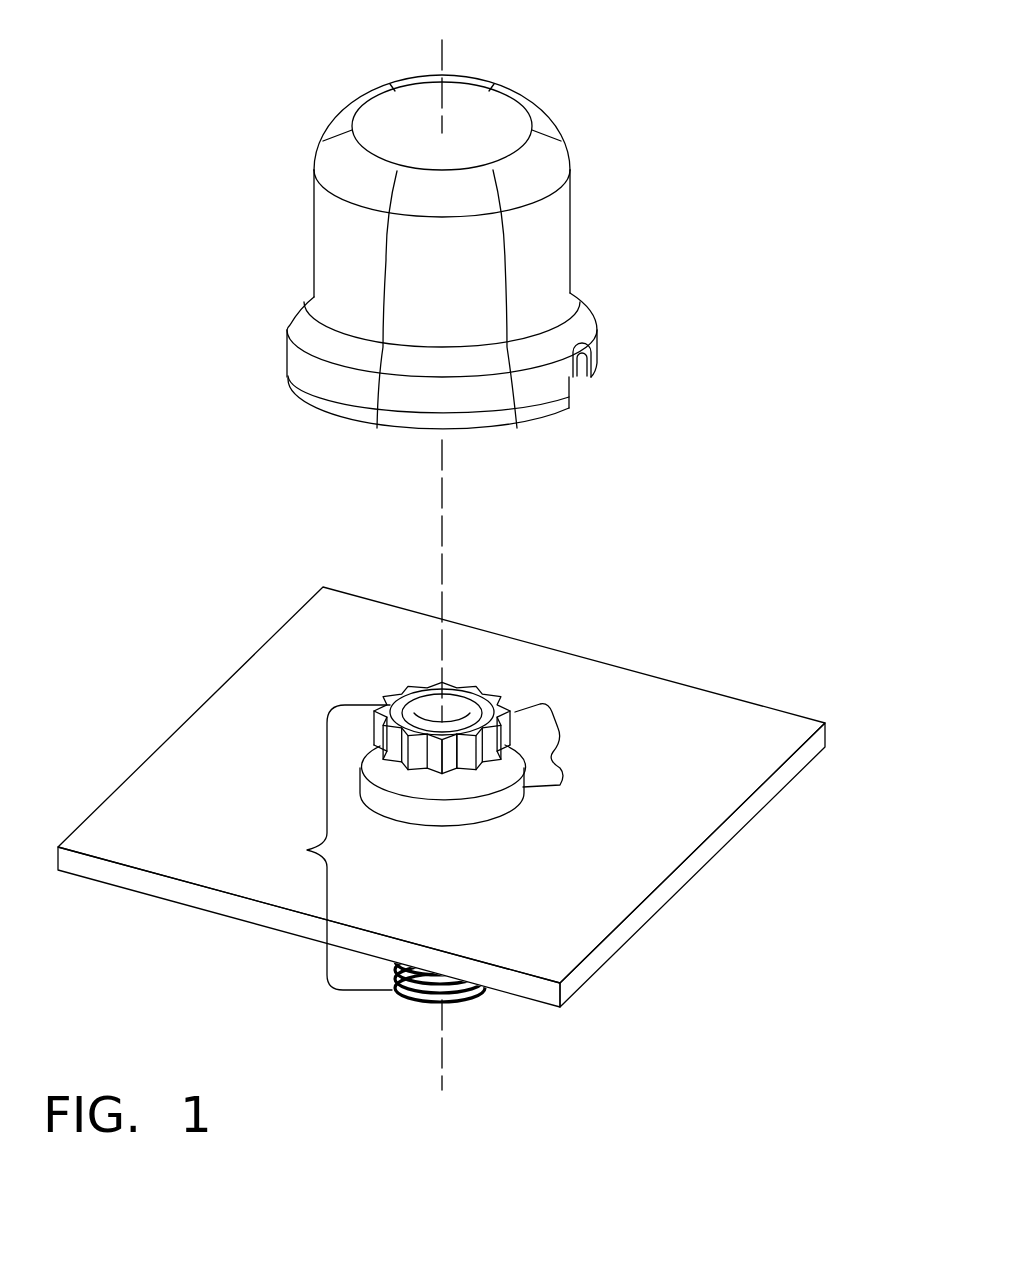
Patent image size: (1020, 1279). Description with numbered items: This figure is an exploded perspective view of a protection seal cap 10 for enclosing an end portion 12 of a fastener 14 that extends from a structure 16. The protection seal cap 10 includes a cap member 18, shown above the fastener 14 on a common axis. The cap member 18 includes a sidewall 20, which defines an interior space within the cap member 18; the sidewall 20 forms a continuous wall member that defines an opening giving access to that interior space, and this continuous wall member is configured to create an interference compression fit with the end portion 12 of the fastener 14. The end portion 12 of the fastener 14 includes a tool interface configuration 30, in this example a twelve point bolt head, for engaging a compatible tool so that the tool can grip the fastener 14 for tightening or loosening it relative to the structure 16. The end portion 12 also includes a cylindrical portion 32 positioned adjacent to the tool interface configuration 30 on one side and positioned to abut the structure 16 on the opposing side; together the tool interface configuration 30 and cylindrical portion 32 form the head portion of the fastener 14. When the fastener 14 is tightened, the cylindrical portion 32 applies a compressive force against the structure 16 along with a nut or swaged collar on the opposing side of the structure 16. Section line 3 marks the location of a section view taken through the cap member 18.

The protection seal cap 10 is at (580, 66).
The end portion 12 is at (567, 723).
The fastener 14 is at (307, 850).
The structure 16 is at (700, 727).
The cap member 18 is at (333, 230).
The sidewall 20 is at (548, 263).
The tool interface configuration 30 is at (464, 774).
The cylindrical portion 32 is at (437, 816).
The section line 3- 3 is at (315, 300).